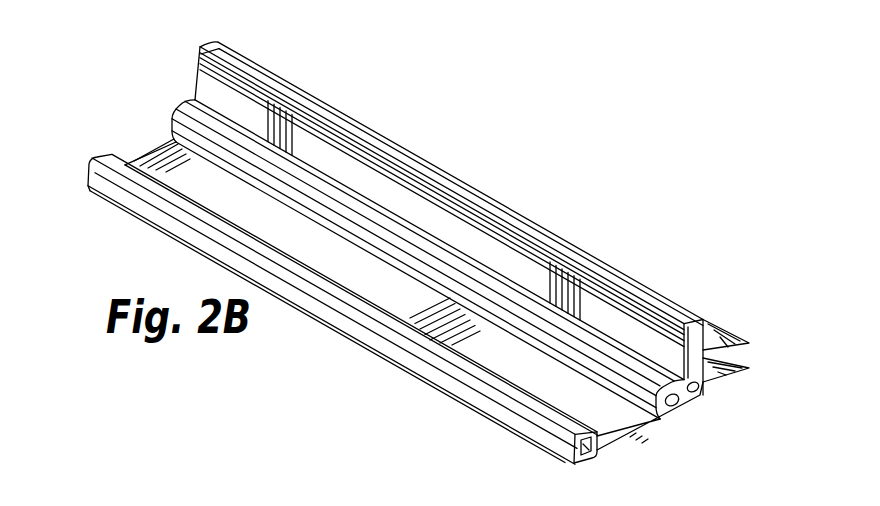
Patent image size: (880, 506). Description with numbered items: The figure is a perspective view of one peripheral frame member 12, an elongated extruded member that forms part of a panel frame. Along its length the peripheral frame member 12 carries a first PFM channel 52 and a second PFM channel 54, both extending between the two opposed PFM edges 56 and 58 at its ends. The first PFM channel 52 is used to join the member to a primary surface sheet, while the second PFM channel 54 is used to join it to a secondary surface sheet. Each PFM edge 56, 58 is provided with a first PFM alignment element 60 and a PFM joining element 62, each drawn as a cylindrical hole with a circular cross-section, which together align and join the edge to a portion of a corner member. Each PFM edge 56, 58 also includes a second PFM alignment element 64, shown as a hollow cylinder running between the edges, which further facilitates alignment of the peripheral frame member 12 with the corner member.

The peripheral frame member 12 is at (556, 214).
The first PFM channel 52 is at (207, 40).
The second PFM channel 54 is at (746, 356).
The PFM edge 56 is at (152, 150).
The PFM edge 58 is at (642, 434).
The first PFM alignment element 60 is at (173, 107).
The PFM joining element 62 is at (697, 394).
The second PFM alignment element 64 is at (92, 157).